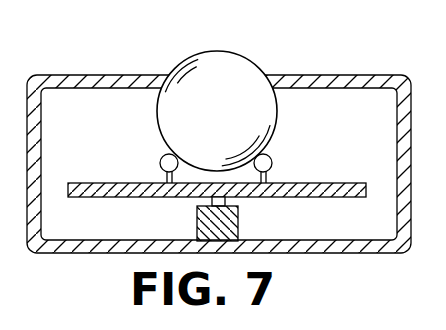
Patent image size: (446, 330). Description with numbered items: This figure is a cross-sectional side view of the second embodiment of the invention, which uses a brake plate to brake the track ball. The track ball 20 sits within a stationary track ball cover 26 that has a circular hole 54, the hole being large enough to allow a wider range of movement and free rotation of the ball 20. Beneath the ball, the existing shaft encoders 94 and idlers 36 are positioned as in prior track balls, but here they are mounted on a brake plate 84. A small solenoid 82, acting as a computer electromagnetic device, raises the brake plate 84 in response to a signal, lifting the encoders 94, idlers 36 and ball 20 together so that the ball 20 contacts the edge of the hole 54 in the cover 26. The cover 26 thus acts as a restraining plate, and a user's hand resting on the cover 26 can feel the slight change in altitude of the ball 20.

The track ball 20 is at (240, 72).
The track ball cover 26 is at (327, 75).
The idlers 36 is at (272, 163).
The circular hole 54 is at (165, 75).
The solenoid 82 is at (197, 226).
The brake plate 84 is at (320, 197).
The shaft encoders 94 is at (161, 159).